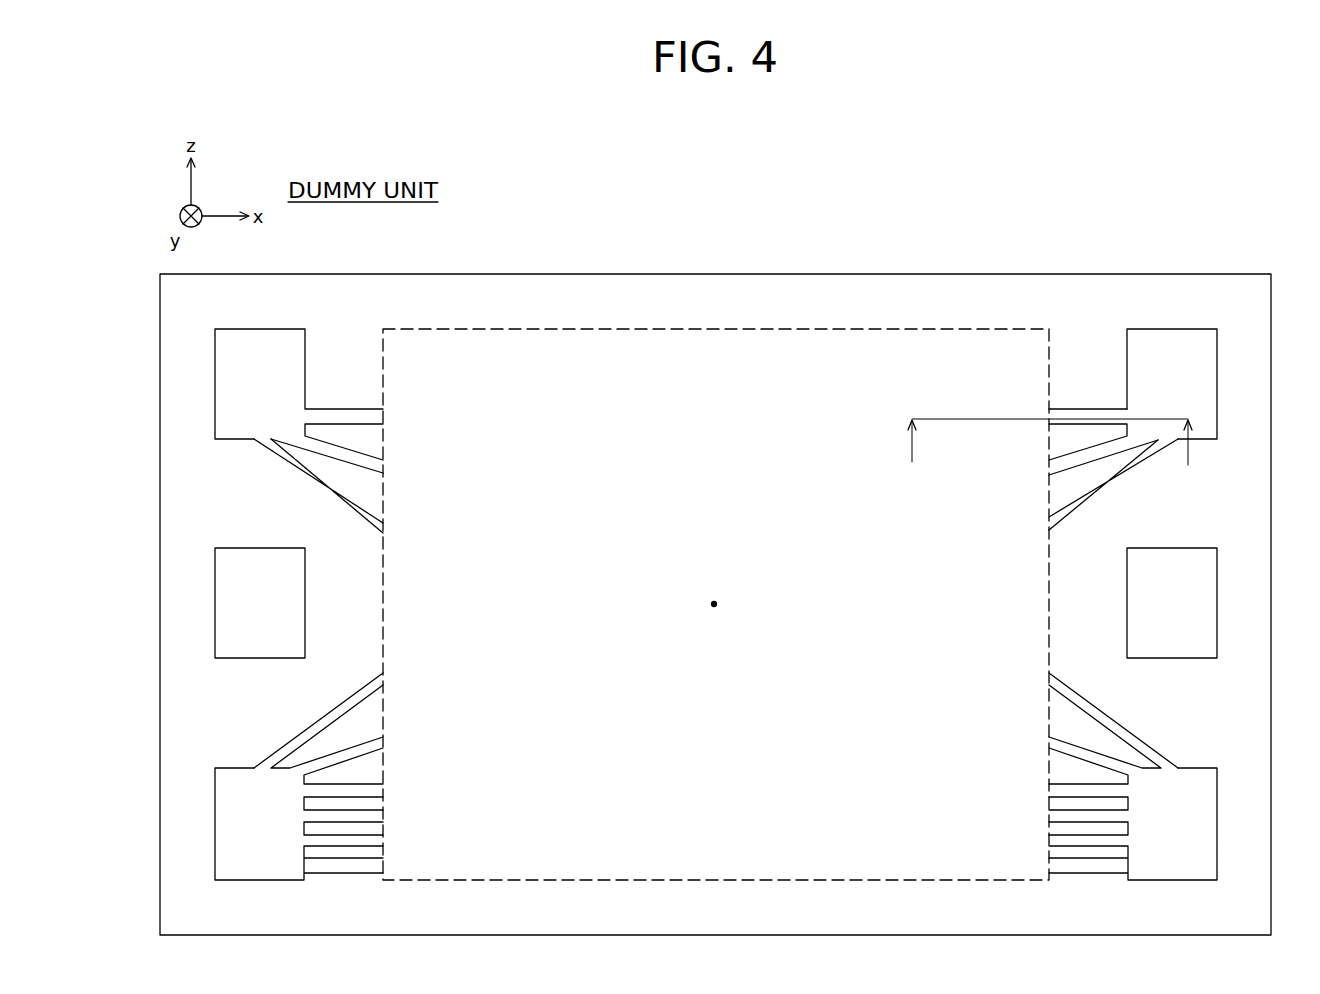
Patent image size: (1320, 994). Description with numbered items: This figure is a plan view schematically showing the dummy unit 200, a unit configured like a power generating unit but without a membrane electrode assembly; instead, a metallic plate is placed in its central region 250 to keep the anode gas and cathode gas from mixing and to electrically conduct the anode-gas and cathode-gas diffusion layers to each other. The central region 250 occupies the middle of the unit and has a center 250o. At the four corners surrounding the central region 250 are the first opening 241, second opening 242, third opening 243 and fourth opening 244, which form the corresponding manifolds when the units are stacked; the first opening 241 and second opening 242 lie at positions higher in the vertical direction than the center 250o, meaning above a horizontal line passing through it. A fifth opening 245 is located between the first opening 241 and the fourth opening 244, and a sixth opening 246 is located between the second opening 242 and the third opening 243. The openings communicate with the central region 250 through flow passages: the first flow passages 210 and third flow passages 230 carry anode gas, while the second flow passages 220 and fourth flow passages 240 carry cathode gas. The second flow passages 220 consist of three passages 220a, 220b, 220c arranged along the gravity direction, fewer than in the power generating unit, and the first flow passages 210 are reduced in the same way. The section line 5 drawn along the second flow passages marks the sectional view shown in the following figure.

The dummy unit 200 is at (1212, 210).
The first flow passages 210 is at (288, 485).
The second flow passages 220 is at (1085, 465).
The second flow passage 220a is at (1100, 500).
The second flow passage 220b is at (1042, 465).
The second flow passage 220c is at (1044, 412).
The third flow passages 230 is at (1142, 724).
The fourth flow passages 240 is at (288, 722).
The first opening 241 is at (238, 396).
The second opening 242 is at (1152, 396).
The third opening 243 is at (1152, 846).
The fourth opening 244 is at (238, 850).
The fifth opening 245 is at (238, 618).
The sixth opening 246 is at (1148, 620).
The central region 250 is at (917, 329).
The center of central region 250o is at (722, 590).
The section 5- 5 is at (1050, 455).